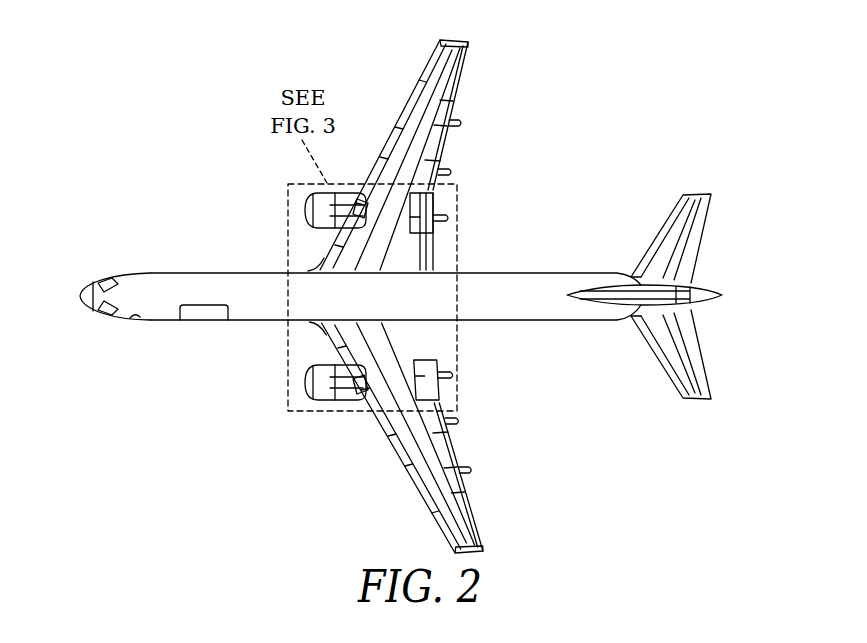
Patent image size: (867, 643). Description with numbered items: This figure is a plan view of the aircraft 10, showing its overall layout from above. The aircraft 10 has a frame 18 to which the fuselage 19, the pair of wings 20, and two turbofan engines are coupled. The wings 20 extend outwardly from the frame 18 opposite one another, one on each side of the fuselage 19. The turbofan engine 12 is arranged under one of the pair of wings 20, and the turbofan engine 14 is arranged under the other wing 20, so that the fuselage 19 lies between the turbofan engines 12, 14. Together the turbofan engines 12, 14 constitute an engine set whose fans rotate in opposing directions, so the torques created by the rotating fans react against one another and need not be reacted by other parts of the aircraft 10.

The aircraft 10 is at (401, 296).
The turbofan engine 12 is at (303, 211).
The turbofan engine 14 is at (303, 381).
The frame 18 is at (530, 282).
The fuselage 19 is at (436, 281).
The pair of wings 20 is at (465, 80).